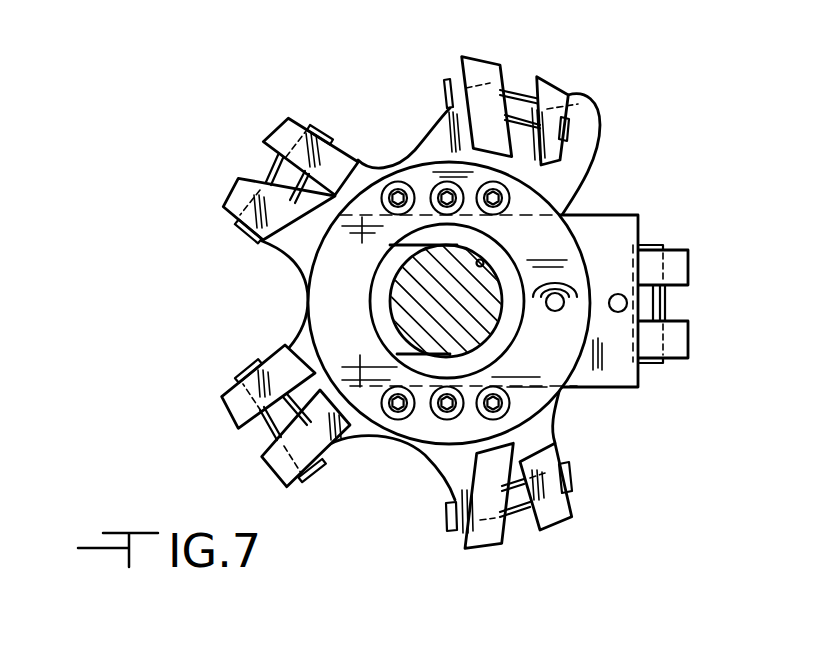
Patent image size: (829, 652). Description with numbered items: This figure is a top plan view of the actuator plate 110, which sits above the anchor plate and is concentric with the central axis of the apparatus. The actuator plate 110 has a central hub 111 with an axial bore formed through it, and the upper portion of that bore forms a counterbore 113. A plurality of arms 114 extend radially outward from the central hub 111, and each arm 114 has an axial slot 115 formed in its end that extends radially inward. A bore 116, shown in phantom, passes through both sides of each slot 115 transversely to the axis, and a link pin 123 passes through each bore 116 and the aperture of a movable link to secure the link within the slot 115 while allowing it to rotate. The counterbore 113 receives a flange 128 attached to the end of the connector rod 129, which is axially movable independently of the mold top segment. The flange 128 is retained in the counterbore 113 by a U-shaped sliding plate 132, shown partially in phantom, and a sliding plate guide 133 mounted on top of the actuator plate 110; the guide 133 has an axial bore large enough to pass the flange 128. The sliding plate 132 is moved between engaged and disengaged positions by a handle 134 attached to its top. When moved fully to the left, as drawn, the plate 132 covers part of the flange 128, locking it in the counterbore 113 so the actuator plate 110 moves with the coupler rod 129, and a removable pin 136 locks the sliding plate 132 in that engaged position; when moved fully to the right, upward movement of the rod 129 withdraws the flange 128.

The actuator plate 110 is at (590, 171).
The central hub 111 is at (377, 308).
The counterbore 113 is at (390, 334).
The arms 114 is at (288, 117).
The axial slot 115 is at (430, 299).
The bore 116 is at (462, 487).
The link pin 123 is at (551, 440).
The flange 128 is at (390, 258).
The connector rod 129 is at (481, 260).
The sliding plate 132 is at (626, 274).
The sliding plate guide 133 is at (418, 182).
The handle 134 is at (617, 293).
The removable pin 136 is at (555, 311).